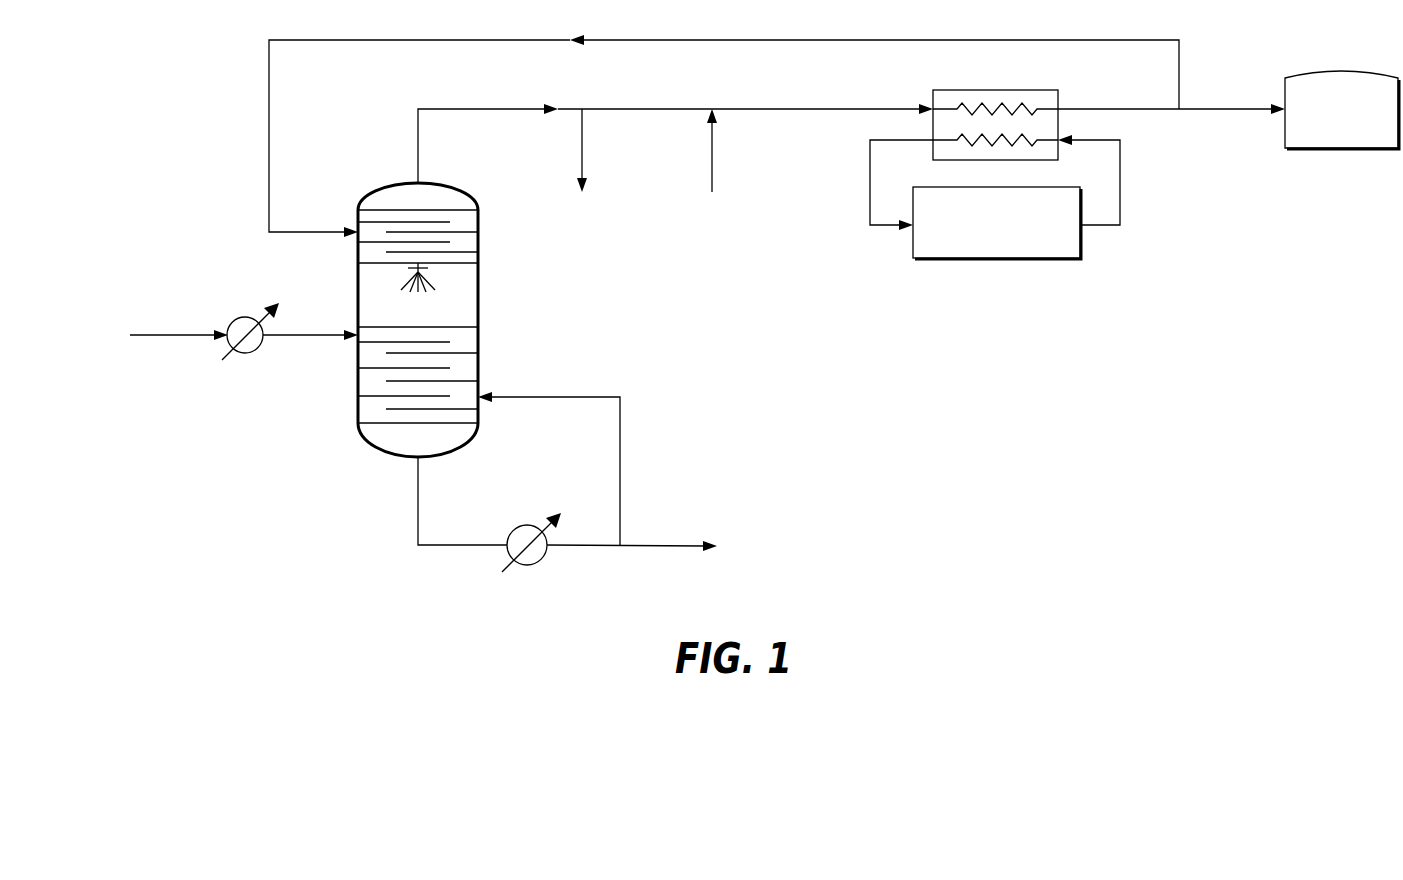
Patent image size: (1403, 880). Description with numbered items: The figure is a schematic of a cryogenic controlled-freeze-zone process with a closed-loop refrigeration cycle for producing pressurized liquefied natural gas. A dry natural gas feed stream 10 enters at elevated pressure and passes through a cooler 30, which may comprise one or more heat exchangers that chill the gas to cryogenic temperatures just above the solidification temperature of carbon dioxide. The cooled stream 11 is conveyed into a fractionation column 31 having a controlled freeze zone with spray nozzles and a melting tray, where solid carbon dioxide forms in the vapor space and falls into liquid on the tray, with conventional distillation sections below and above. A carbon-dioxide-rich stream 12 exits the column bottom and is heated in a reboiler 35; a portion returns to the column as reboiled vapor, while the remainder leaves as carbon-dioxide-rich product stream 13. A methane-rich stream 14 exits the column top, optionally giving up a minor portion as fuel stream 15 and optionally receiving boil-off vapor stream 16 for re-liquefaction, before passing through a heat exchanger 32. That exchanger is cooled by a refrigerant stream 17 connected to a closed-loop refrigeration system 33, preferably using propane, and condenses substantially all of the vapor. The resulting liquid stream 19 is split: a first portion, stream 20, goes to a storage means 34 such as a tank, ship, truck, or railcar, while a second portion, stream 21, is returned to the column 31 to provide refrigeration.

The natural gas feed stream 10 is at (183, 338).
The cooled stream 11 is at (314, 338).
The CO2-rich stream 12 is at (417, 503).
The CO2-rich product stream 13 is at (656, 545).
The methane-rich stream 14 is at (418, 138).
The fuel stream 15 is at (582, 130).
The boil-off vapor stream 16 is at (712, 145).
The refrigerant stream 17 is at (870, 176).
The liquid stream 19 is at (1134, 112).
The PLNG product stream 20 is at (1210, 112).
The return stream 21 is at (906, 40).
The cooler 30 is at (237, 316).
The fractionation column 31 is at (478, 297).
The heat exchanger 32 is at (1016, 90).
The closed-loop refrigeration system 33 is at (1020, 259).
The storage means 34 is at (1333, 70).
The reboiler 35 is at (544, 560).